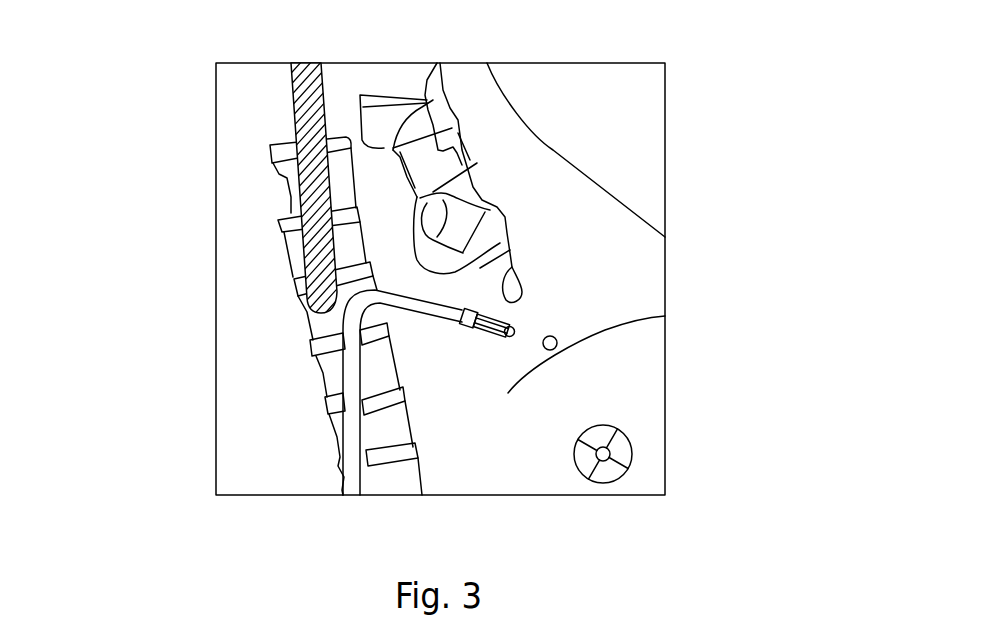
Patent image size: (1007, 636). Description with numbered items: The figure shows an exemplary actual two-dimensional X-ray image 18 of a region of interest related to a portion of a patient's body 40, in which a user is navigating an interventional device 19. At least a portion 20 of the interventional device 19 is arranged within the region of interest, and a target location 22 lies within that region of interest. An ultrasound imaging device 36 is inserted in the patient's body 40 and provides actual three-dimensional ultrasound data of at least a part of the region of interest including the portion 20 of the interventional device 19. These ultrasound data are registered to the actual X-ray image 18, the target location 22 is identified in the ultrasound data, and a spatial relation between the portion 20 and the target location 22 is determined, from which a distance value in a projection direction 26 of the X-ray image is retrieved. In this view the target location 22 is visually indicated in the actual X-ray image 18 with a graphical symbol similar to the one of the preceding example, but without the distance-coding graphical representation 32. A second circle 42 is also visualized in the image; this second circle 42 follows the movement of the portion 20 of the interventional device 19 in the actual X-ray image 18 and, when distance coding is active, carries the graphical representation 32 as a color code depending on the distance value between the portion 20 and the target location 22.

The actual 2D X-ray image 18 is at (172, 84).
The interventional device 19 is at (348, 480).
The portion of the interventional device 20 is at (531, 435).
The target location 22 is at (559, 330).
The projection direction 26 is at (640, 445).
The graphical representation 32 is at (531, 435).
The ultrasound imaging device 36 is at (288, 180).
The patient's body 40 is at (575, 137).
The second circle 42 is at (503, 339).